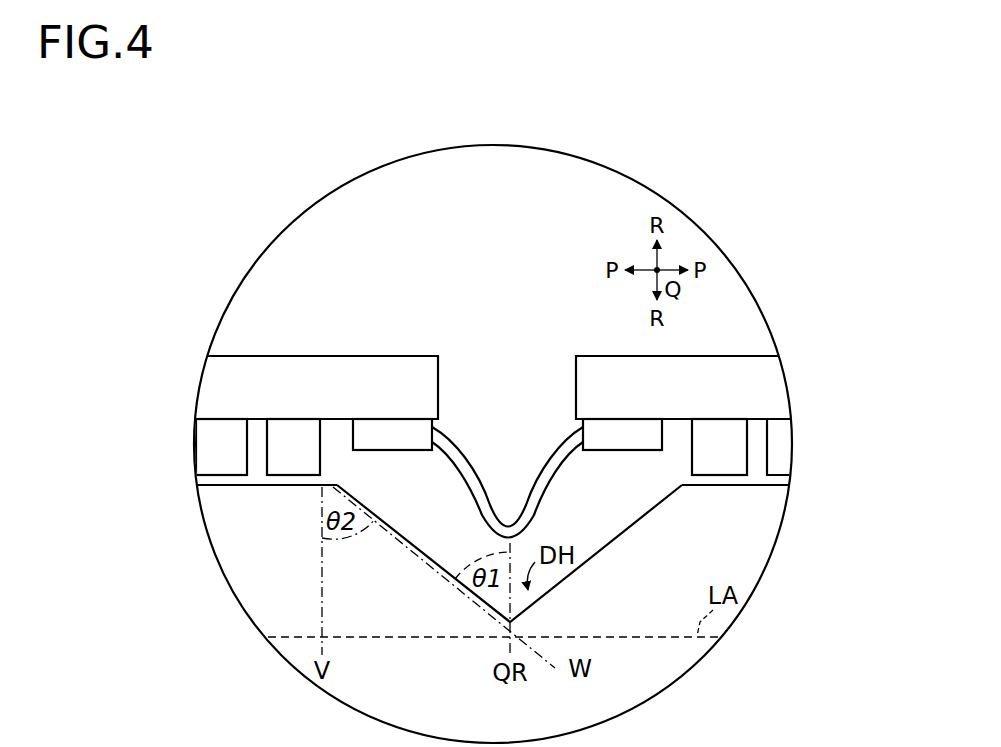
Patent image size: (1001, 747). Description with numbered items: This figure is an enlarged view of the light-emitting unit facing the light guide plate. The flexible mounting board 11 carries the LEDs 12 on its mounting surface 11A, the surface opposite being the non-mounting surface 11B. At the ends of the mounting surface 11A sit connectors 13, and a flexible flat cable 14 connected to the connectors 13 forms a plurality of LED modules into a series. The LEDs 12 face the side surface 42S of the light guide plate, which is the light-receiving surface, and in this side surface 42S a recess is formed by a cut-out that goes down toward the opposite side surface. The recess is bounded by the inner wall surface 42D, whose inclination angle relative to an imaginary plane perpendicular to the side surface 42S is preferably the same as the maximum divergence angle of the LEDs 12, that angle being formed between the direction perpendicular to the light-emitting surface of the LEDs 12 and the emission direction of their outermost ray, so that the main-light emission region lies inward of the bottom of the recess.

The mounting board 11 is at (500, 387).
The mounting surface 11A is at (343, 421).
The non-mounting surface 11B is at (600, 355).
The LED 12 is at (523, 447).
The connector 13 is at (507, 434).
The flexible flat cable 14 is at (510, 543).
The inner wall surface 42D is at (412, 545).
The side surface 42S is at (698, 487).